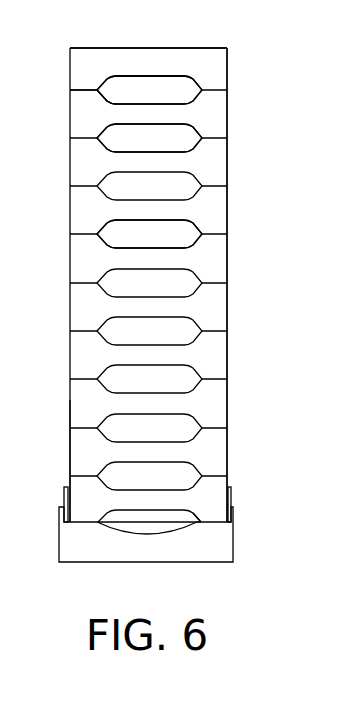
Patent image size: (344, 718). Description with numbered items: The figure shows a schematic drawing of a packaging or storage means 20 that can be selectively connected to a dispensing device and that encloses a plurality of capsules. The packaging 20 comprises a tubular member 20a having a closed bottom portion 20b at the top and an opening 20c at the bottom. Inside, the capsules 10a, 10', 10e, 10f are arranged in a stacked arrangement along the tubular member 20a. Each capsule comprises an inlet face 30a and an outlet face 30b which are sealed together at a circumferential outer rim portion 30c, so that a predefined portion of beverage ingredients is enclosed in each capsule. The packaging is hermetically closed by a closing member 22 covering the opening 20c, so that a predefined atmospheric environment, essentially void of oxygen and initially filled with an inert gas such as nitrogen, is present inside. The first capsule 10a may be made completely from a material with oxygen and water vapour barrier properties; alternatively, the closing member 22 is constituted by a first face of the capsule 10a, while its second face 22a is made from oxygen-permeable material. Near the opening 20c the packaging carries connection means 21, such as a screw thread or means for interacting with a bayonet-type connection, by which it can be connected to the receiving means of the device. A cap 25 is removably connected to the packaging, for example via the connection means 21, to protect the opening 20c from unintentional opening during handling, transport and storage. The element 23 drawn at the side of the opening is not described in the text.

The storage means 20 is at (262, 164).
The tubular member 20a is at (228, 292).
The closed bottom portion 20b is at (180, 48).
The opening 20c is at (83, 523).
The inlet face 30a is at (133, 75).
The outlet face 30b is at (97, 102).
The circumferential outer rim portion 30c is at (78, 89).
The capsule 10f is at (185, 90).
The capsule 10e is at (185, 137).
The capsule 10' is at (116, 212).
The first capsule 10a is at (141, 522).
The connection means 21 is at (62, 490).
The closing member 22 is at (173, 523).
The second face 22a is at (195, 512).
The retaining plate 23 is at (233, 513).
The cap 25 is at (233, 550).